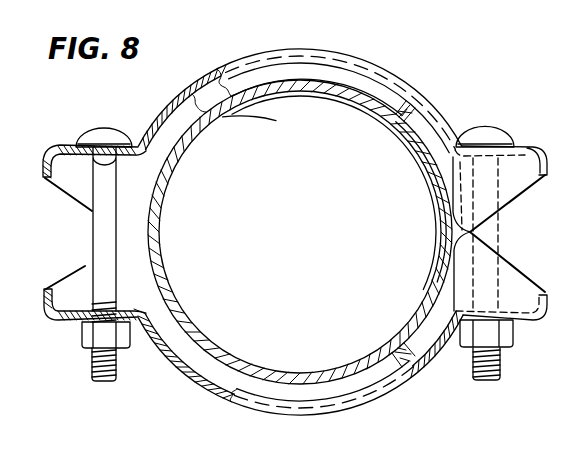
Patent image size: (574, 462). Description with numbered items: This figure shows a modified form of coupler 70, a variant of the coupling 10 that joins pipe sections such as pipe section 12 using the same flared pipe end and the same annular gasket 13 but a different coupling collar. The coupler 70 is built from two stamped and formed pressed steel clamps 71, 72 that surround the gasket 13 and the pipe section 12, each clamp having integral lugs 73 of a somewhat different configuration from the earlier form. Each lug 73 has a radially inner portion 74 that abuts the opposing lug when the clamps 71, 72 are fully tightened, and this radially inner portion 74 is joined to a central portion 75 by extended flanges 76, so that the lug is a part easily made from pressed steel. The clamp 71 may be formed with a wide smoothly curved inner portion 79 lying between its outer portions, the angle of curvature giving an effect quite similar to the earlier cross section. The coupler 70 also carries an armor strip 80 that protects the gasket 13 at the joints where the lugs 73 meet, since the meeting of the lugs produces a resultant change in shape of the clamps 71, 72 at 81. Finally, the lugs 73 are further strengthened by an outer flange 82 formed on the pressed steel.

The coupling 10 is at (297, 193).
The pipe section 12 is at (159, 184).
The annular gasket 13 is at (143, 218).
The coupler 70 is at (382, 63).
The clamp 71 is at (402, 95).
The clamp 72 is at (372, 393).
The lug 73 is at (55, 152).
The radially inner portion 74 is at (452, 221).
The central portion 75 is at (62, 146).
The extended flange 76 is at (85, 266).
The inner portion 79 is at (206, 126).
The armor strip 80 is at (130, 282).
The change in shape of the clamps 81 is at (417, 98).
The outer flange 82 is at (43, 177).